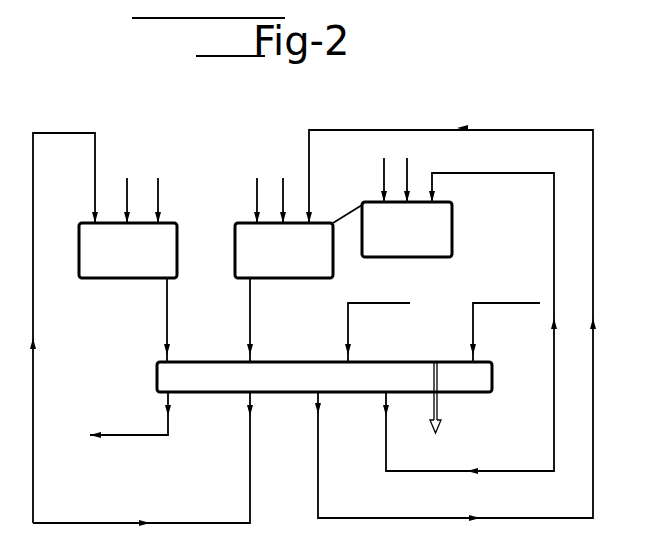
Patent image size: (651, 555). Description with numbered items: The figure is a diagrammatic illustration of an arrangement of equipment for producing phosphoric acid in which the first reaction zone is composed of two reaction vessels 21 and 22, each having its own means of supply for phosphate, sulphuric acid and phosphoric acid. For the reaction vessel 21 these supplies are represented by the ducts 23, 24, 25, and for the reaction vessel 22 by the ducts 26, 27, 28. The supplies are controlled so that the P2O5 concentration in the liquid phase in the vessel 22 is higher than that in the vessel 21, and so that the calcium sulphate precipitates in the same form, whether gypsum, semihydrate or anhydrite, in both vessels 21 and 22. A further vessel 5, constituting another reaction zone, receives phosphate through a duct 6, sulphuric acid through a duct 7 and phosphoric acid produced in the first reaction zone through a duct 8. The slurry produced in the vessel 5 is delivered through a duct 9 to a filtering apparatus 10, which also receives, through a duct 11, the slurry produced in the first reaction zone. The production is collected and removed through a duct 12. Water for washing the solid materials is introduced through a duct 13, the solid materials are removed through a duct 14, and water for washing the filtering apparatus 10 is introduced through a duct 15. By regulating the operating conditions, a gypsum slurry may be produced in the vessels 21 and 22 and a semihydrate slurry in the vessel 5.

The vessel 5 is at (98, 272).
The duct 6 is at (158, 178).
The duct 7 is at (127, 178).
The duct 8 is at (62, 133).
The duct 9 is at (167, 318).
The filtering apparatus 10 is at (157, 377).
The duct 11 is at (250, 318).
The duct 12 is at (168, 425).
The duct 13 is at (348, 325).
The duct 14 is at (440, 413).
The duct 15 is at (473, 325).
The reaction vessel 21 is at (436, 230).
The reaction vessel 22 is at (270, 278).
The duct 23 is at (384, 160).
The duct 24 is at (407, 165).
The duct 25 is at (458, 173).
The duct 26 is at (257, 178).
The duct 27 is at (283, 178).
The duct 28 is at (309, 130).